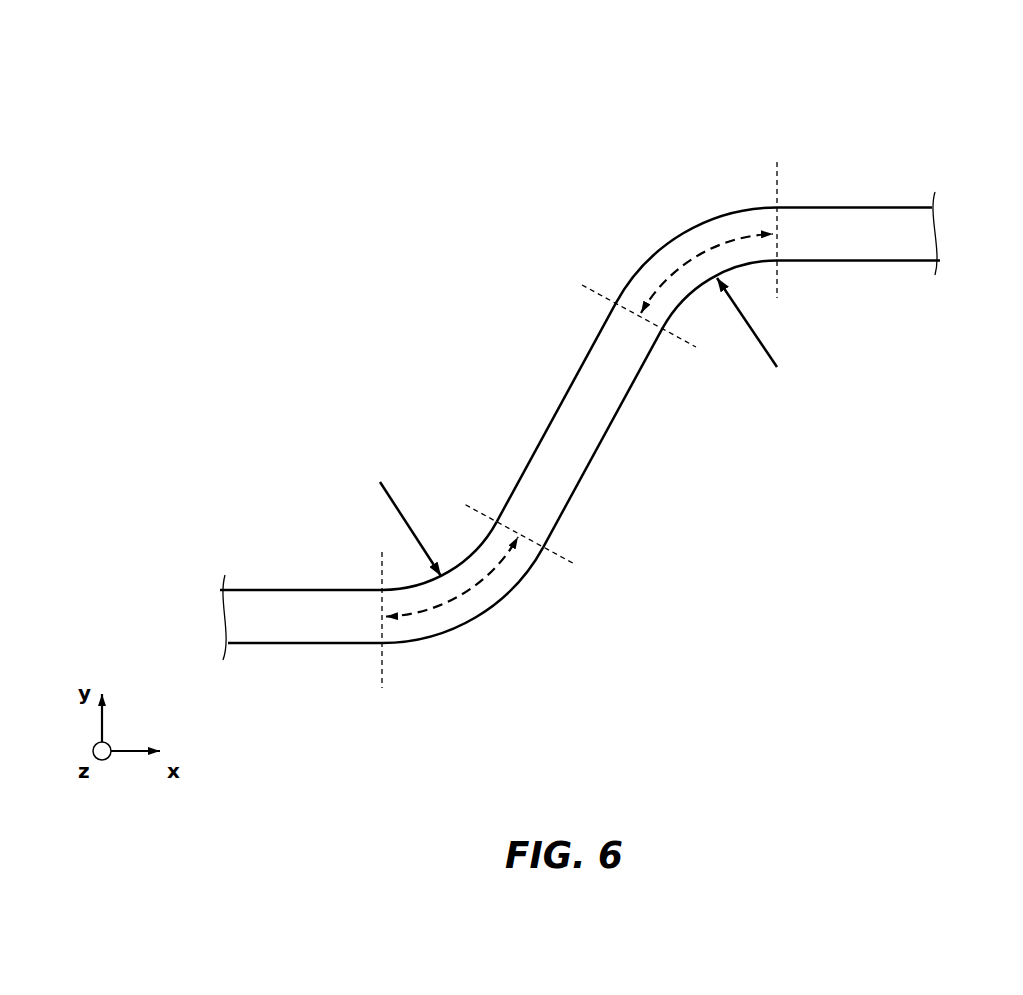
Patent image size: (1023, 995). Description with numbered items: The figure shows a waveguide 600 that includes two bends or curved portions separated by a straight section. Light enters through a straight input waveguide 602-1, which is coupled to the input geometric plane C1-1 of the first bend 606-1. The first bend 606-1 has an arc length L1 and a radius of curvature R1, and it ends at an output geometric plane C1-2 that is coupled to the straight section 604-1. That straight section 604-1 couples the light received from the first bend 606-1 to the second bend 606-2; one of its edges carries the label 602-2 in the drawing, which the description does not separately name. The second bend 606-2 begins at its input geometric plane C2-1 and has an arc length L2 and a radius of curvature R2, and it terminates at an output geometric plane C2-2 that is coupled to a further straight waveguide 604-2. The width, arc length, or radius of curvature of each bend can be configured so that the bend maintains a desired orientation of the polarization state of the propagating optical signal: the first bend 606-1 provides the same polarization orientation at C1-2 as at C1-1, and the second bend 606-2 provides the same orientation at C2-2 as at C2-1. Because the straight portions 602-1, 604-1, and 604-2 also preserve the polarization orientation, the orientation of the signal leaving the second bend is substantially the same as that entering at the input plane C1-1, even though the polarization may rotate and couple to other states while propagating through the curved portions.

The waveguide 600 is at (252, 88).
The input waveguide 602-1 is at (275, 620).
The second straight segment (upper edge of diagonal segment) 602-2 is at (615, 352).
The straight section 604-1 is at (565, 472).
The waveguide 604-2 is at (883, 232).
The first bend 606-1 is at (502, 658).
The second bend 606-2 is at (673, 220).
The input geometric plane C1-1 is at (382, 668).
The output geometric plane C1-2 is at (562, 562).
The input geometric plane C2-1 is at (597, 280).
The output geometric plane C2-2 is at (775, 182).
The arc length L1 is at (483, 587).
The arc length L2 is at (682, 262).
The radius of curvature R1 is at (392, 490).
The radius of curvature R2 is at (768, 360).